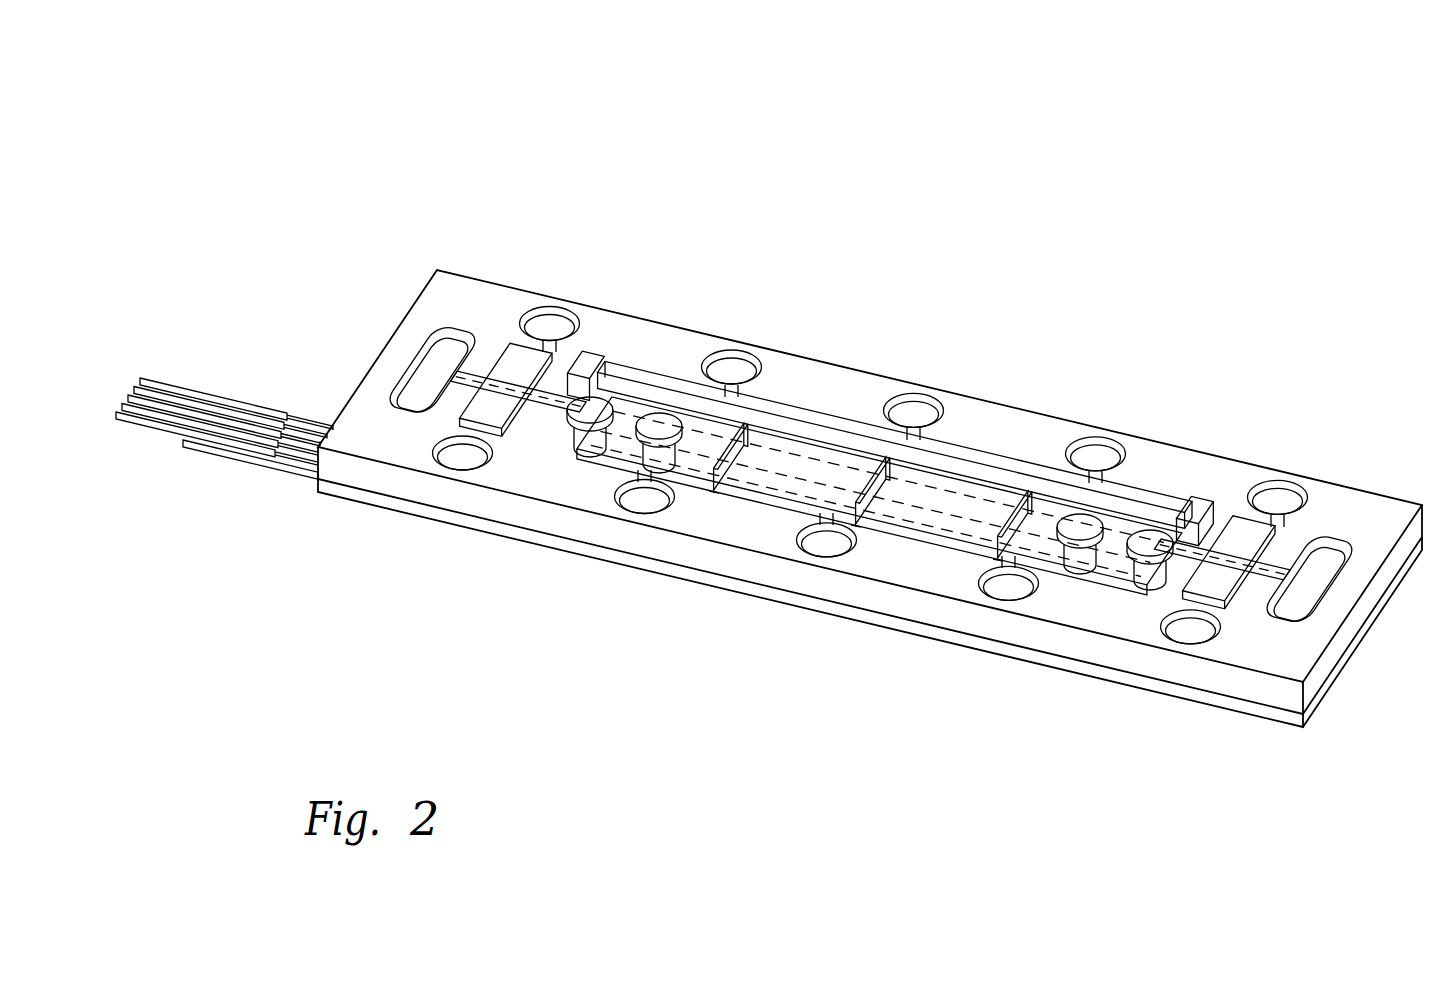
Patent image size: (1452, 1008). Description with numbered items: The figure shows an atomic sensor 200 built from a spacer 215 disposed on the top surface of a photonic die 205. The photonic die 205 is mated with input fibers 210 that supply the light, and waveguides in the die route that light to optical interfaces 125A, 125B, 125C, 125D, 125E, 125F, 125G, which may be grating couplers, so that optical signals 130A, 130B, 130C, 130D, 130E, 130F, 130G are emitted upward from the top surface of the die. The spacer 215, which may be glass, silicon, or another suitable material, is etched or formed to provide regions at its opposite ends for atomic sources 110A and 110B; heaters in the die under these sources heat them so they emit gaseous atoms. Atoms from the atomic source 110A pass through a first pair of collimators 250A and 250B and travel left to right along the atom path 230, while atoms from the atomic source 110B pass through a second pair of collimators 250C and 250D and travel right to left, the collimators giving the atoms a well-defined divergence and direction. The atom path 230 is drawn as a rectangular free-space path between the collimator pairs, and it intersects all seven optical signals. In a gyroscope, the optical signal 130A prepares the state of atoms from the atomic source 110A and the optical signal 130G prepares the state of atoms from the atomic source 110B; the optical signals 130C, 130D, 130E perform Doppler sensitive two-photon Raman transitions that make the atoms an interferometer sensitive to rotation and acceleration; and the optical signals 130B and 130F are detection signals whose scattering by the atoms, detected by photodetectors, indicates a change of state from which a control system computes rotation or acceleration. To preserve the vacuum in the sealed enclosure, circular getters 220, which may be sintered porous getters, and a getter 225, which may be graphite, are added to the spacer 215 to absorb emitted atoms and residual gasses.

The atomic sensor 200 is at (1050, 110).
The photonic die 205 is at (455, 516).
The input fibers 210 is at (276, 481).
The spacer 215 is at (440, 284).
The getters 220 is at (908, 688).
The getter 225 is at (829, 428).
The atom path 230 is at (780, 495).
The collimator 250A is at (490, 345).
The collimator 250B is at (590, 400).
The collimator 250C is at (1210, 518).
The collimator 250D is at (1262, 522).
The atomic source 110A is at (428, 372).
The atomic source 110B is at (1312, 573).
The optical signal 130A is at (597, 407).
The optical signal 130B is at (662, 427).
The optical signal 130C is at (745, 428).
The optical signal 130D is at (884, 462).
The optical signal 130E is at (1024, 500).
The optical signal 130F is at (1080, 525).
The optical signal 130G is at (1150, 542).
The optical interface 125A is at (592, 455).
The optical interface 125B is at (659, 472).
The optical interface 125C is at (714, 493).
The optical interface 125D is at (857, 527).
The optical interface 125E is at (999, 562).
The optical interface 125F is at (1078, 574).
The optical interface 125G is at (1148, 590).